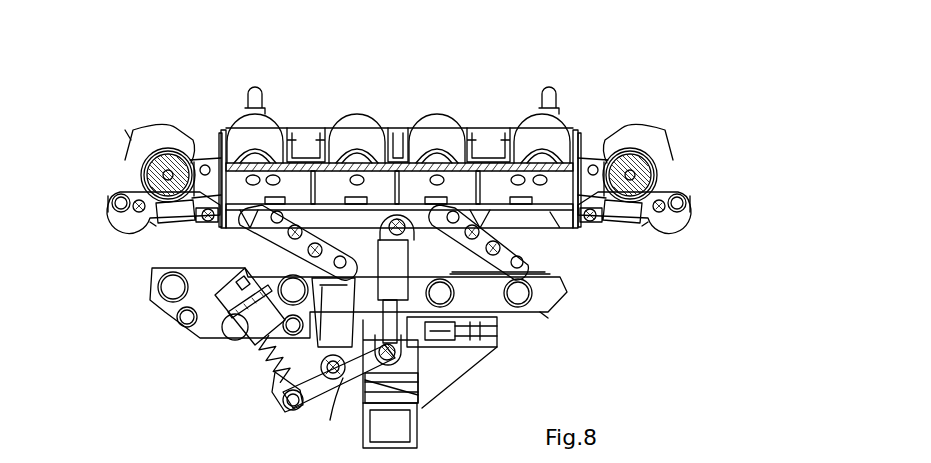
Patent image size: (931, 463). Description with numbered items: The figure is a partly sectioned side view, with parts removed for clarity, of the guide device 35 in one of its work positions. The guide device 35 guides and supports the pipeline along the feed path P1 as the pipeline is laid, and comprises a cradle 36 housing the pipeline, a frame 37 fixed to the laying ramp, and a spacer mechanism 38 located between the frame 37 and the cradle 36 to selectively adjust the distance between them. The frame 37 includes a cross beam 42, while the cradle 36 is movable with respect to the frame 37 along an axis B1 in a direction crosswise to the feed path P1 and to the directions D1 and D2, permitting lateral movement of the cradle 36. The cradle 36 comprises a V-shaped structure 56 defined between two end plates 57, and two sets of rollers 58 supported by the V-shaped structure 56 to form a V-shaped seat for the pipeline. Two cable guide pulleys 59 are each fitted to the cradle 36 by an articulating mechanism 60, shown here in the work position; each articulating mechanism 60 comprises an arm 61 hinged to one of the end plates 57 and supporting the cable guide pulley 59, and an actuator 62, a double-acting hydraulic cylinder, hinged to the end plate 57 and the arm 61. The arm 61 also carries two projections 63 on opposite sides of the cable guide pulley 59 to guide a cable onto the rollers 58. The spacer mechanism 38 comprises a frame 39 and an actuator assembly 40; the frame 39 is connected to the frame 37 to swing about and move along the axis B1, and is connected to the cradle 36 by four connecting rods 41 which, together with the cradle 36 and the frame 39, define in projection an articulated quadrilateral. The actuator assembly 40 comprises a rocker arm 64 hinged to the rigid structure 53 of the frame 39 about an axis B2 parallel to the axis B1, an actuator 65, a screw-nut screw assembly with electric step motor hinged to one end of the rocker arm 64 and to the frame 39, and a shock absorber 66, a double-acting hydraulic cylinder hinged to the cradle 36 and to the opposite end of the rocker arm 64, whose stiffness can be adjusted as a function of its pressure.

The guide device 35 is at (120, 87).
The cradle 36 is at (386, 114).
The frame 37 is at (422, 432).
The spacer mechanism 38 is at (580, 308).
The frame 39 is at (540, 318).
The actuator assembly 40 is at (258, 373).
The connecting rods 41 is at (295, 250).
The cross beam 42 is at (372, 433).
The rigid structure 53 is at (540, 283).
The V-shaped structure 56 is at (560, 212).
The end plates 57 is at (222, 140).
The rollers 58 is at (262, 136).
The cable guide pulley 59 is at (104, 177).
The articulating mechanism 60 is at (152, 227).
The arm 61 is at (135, 190).
The actuator 62 is at (170, 213).
The projections 63 is at (157, 138).
The rocker arm 64 is at (332, 378).
The actuator 65 is at (250, 332).
The shock absorber 66 is at (400, 285).
The axis B1 is at (282, 453).
The axis B2 is at (420, 400).
The direction D1 is at (318, 48).
The direction D2 is at (60, 248).
The feed path P1 is at (515, 70).